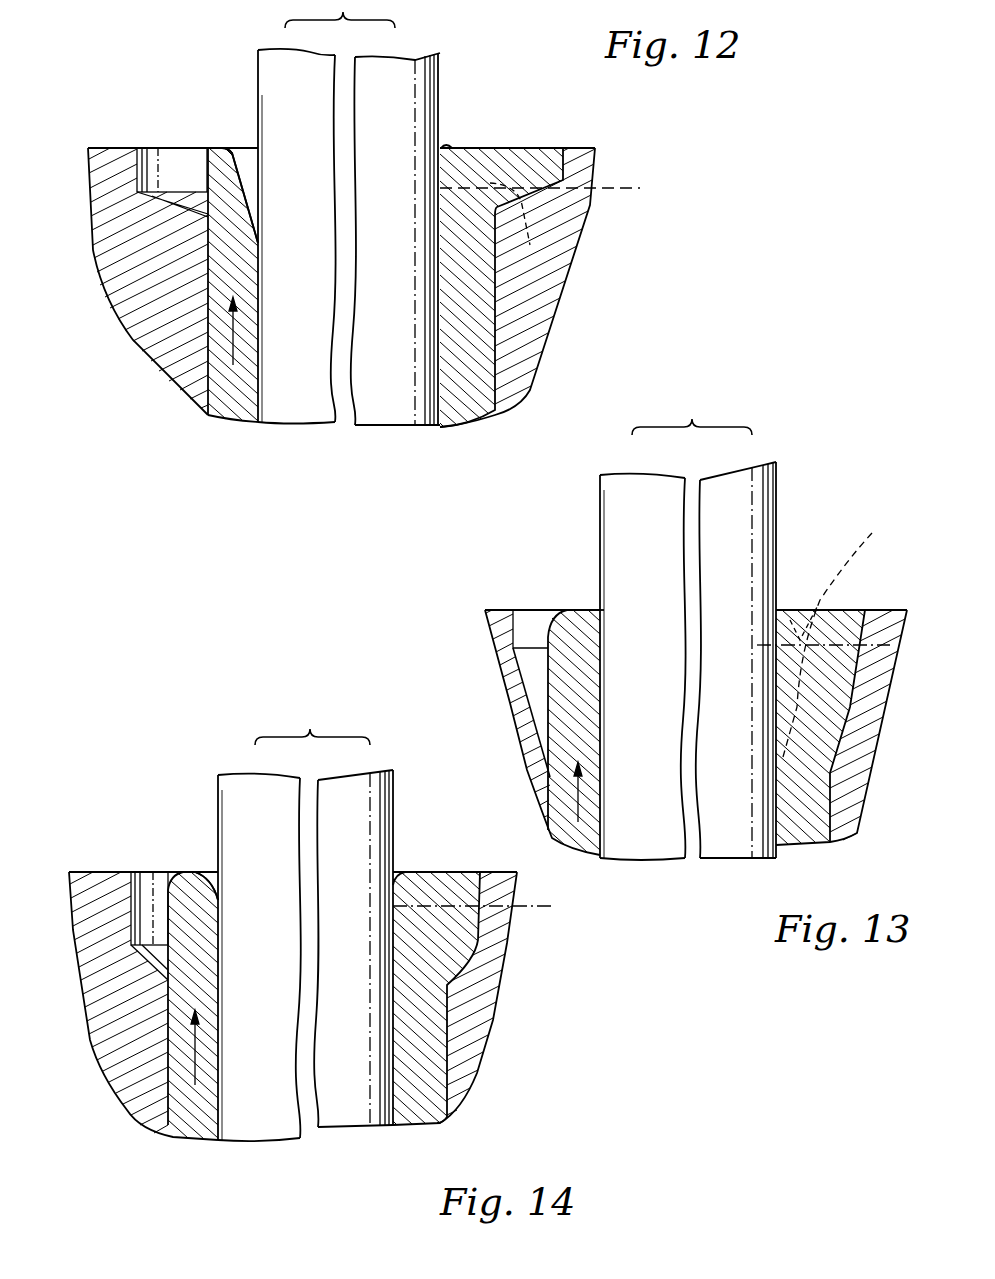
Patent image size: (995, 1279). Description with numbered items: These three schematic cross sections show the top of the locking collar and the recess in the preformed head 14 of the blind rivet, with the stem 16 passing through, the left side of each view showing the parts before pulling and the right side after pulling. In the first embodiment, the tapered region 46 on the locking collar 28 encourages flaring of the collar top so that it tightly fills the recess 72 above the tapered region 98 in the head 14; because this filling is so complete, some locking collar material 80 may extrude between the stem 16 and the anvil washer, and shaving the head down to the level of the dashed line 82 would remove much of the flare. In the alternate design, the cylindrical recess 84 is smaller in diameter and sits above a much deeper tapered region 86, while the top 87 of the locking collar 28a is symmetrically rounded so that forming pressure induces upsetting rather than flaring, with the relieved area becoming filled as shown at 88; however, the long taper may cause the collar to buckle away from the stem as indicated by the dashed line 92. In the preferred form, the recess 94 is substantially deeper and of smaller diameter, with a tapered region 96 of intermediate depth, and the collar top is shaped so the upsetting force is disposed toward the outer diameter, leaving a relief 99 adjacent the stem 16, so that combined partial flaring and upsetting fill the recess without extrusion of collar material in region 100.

In FIG. 12, the preformed head 14 is at (104, 148).
In FIG. 13, the preformed head 14 is at (500, 610).
In FIG. 14, the preformed head 14 is at (83, 875).
In FIG. 12, the stem 16 is at (254, 73).
In FIG. 13, the stem 16 is at (593, 523).
In FIG. 14, the stem 16 is at (213, 818).
In FIG. 12, the locking collar 28 is at (232, 205).
In FIG. 14, the locking collar 28 is at (193, 1005).
In FIG. 13, the locking collar 28a is at (580, 672).
In FIG. 12, the tapered region 46 is at (244, 190).
In FIG. 12, the recess 72 is at (138, 165).
In FIG. 12, the locking collar material 80 is at (450, 142).
In FIG. 12, the dashed line 82 is at (522, 232).
In FIG. 13, the cylindrical recess 84 is at (522, 610).
In FIG. 13, the tapered region 86 is at (532, 673).
In FIG. 13, the top of the locking collar 87 is at (603, 612).
In FIG. 13, the filled relieved area 88 is at (783, 606).
In FIG. 13, the dashed line 92 is at (833, 638).
In FIG. 14, the recess 94 is at (143, 870).
In FIG. 14, the tapered region 96 is at (157, 968).
In FIG. 12, the tapered region 98 is at (180, 204).
In FIG. 14, the relief 99 is at (213, 880).
In FIG. 14, the region 100 is at (398, 868).